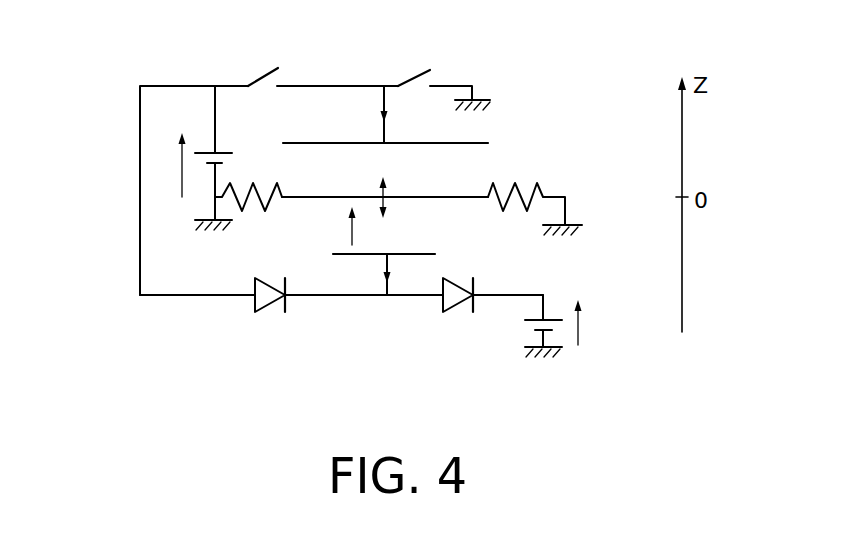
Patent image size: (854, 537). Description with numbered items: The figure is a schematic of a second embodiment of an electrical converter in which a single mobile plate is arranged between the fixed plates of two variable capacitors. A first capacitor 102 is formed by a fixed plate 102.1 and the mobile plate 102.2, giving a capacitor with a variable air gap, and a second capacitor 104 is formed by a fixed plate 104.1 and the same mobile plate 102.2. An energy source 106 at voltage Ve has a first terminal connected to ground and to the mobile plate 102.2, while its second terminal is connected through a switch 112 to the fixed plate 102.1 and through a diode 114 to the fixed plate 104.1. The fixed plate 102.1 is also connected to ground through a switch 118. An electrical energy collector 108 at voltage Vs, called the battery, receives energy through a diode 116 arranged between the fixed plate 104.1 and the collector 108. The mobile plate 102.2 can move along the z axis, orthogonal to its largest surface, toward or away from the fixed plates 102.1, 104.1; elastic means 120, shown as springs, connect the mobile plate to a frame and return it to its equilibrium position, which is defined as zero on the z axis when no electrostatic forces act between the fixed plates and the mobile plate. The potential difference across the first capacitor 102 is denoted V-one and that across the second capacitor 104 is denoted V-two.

The energy source 106 is at (155, 133).
The switch 112 is at (265, 74).
The switch 118 is at (418, 75).
The fixed plate 102.1 is at (317, 143).
The mobile plate 102.2 is at (420, 197).
The first capacitor 102 is at (502, 140).
The elastic means 120 is at (253, 219).
The second capacitor 104 is at (308, 197).
The fixed plate 104.1 is at (412, 254).
The diode 114 is at (270, 303).
The diode 116 is at (458, 303).
The electrical energy collector 108 is at (572, 350).